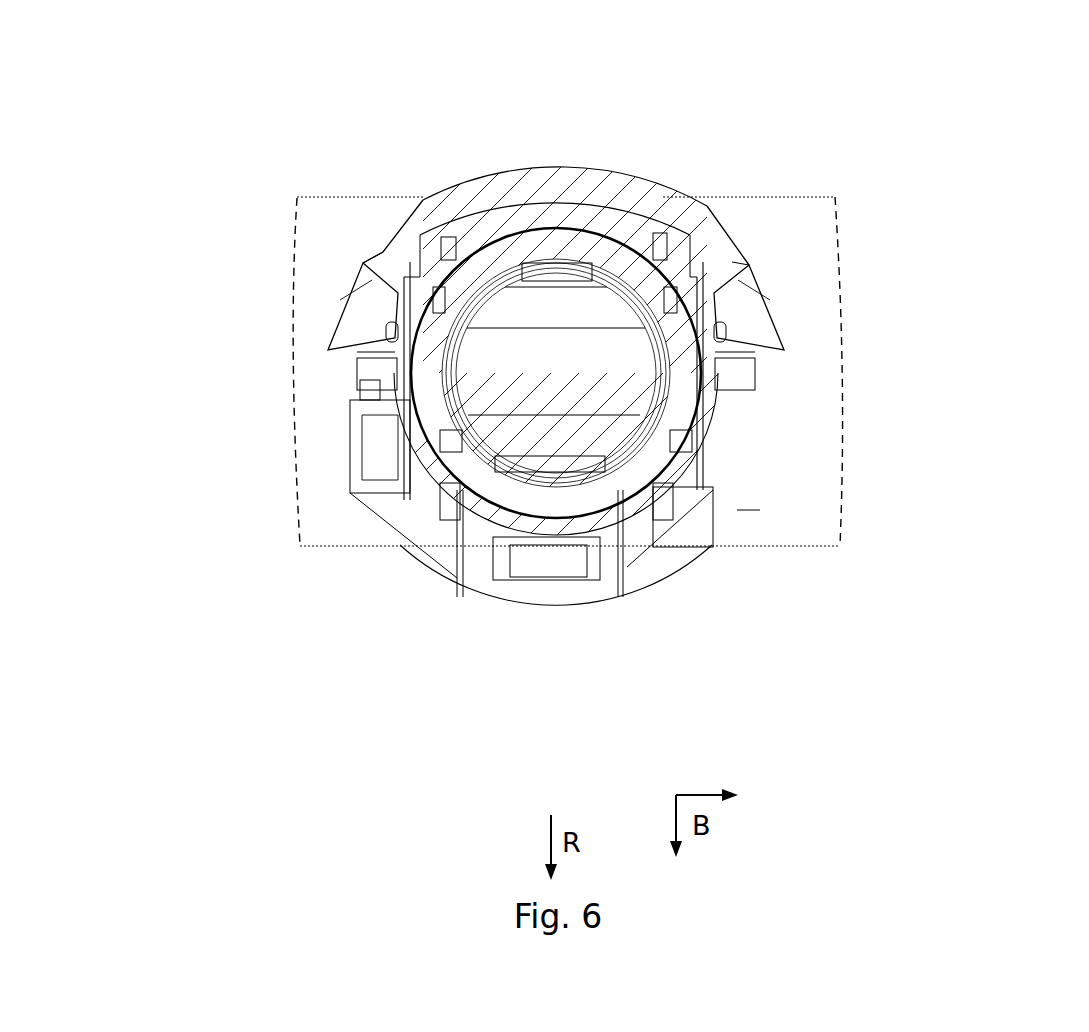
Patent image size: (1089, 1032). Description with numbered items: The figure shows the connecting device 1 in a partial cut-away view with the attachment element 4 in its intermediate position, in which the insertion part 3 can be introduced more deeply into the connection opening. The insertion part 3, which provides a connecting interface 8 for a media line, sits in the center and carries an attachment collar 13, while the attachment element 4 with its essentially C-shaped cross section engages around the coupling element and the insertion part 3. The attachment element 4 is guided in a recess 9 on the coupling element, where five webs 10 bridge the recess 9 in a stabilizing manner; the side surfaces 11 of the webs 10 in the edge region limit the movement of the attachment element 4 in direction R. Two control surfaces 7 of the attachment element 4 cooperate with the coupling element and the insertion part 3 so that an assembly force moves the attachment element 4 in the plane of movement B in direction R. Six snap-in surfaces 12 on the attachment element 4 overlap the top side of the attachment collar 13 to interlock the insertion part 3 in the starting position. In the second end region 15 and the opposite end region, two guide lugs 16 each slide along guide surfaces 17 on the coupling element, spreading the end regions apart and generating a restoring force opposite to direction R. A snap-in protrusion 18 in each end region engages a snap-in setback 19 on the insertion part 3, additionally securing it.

The connecting device 1 is at (255, 218).
The insertion part 3 is at (672, 413).
The attachment element 4 is at (737, 510).
The control surfaces 7 is at (485, 530).
The connecting interface 8 is at (537, 367).
The recess 9 is at (366, 437).
The webs 10 is at (397, 397).
The side surfaces 11 is at (395, 364).
The snap-in surfaces 12 is at (393, 337).
The attachment collar 13 is at (590, 222).
The second end region 15 is at (298, 336).
The guide lugs 16 is at (357, 295).
The guide surfaces 17 is at (398, 292).
The snap-in protrusion 18 is at (398, 292).
The snap-in setbacks 19 is at (440, 307).